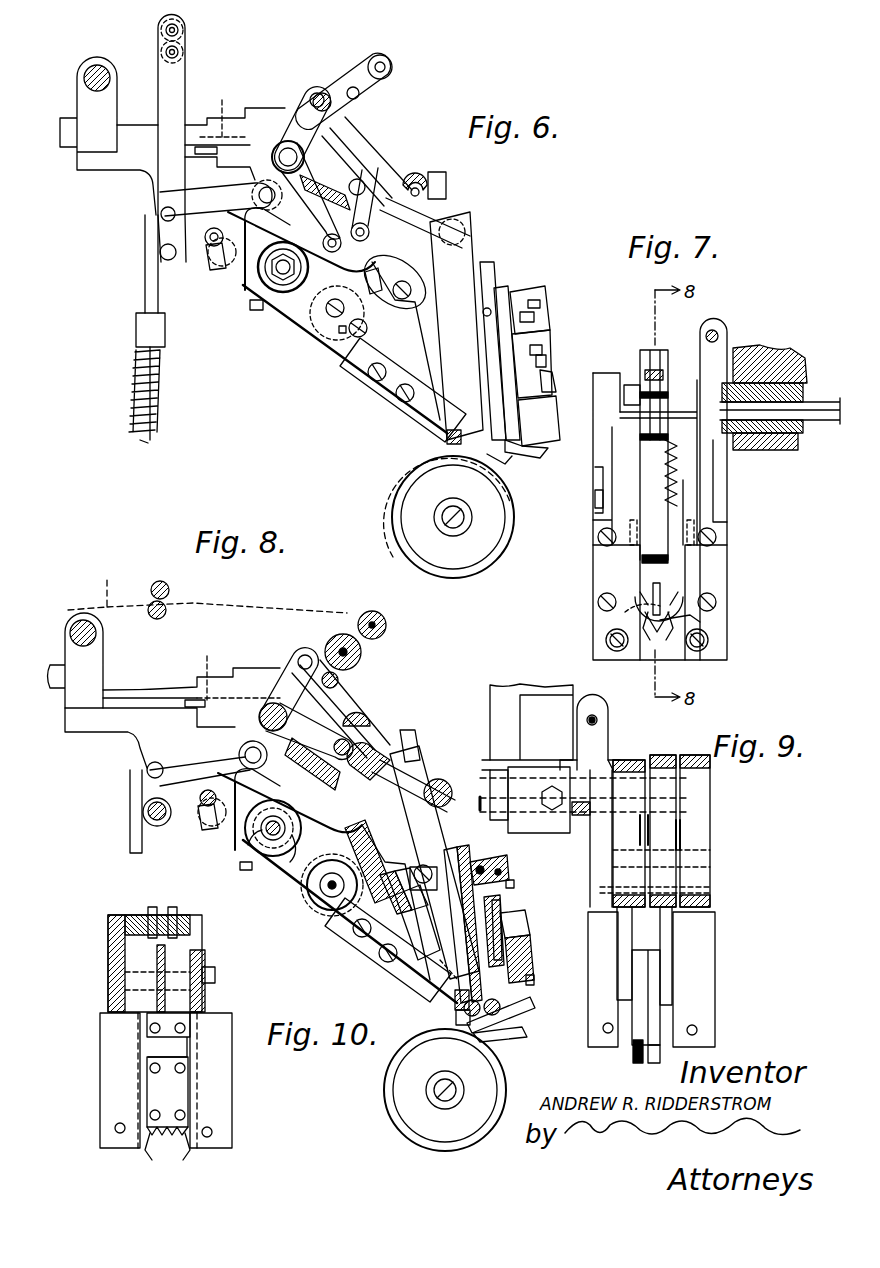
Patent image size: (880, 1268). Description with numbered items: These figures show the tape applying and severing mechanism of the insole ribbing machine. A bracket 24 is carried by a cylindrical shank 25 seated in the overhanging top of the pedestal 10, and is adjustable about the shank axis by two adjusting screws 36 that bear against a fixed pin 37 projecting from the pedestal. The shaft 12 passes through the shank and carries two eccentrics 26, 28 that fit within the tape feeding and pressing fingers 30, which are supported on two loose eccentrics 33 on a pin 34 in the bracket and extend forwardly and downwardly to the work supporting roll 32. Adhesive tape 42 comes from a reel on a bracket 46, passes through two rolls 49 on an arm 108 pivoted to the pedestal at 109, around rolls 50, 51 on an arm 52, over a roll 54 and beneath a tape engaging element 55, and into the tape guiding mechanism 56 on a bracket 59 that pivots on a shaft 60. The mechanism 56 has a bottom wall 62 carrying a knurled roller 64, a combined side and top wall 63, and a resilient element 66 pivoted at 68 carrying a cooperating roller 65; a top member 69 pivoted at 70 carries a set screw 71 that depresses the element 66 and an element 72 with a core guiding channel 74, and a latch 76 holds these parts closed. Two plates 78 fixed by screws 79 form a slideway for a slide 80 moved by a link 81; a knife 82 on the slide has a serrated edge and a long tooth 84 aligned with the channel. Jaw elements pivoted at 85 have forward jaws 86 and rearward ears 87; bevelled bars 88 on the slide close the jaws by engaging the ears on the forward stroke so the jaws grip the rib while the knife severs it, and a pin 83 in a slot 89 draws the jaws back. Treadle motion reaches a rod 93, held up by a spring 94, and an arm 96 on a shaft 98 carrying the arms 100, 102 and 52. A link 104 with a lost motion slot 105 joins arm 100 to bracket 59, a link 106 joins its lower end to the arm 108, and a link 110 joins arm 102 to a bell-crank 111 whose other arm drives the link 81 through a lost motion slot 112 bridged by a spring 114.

In FIG. 6, the pedestal 10 is at (283, 140).
In FIG. 7, the pedestal 10 is at (760, 348).
In FIG. 8, the pedestal 10 is at (310, 768).
In FIG. 7, the shaft 12 is at (826, 398).
In FIG. 9, the shaft 12 is at (690, 795).
In FIG. 8, the shaft 12 is at (270, 836).
In FIG. 6, the bracket 24 is at (258, 283).
In FIG. 7, the bracket 24 is at (696, 376).
In FIG. 8, the bracket 24 is at (234, 842).
In FIG. 10, the bracket 24 is at (137, 960).
In FIG. 7, the cylindrical shank 25 is at (793, 382).
In FIG. 9, the cylindrical shank 25 is at (518, 762).
In FIG. 8, the cylindrical shank 25 is at (496, 745).
In FIG. 9, the eccentric 26 is at (625, 772).
In FIG. 8, the eccentric 26 is at (250, 858).
In FIG. 9, the eccentric 28 is at (667, 765).
In FIG. 8, the eccentric 28 is at (290, 853).
In FIG. 6, the tape feeding and pressing fingers 30 is at (445, 442).
In FIG. 9, the tape feeding and pressing fingers 30 is at (652, 1058).
In FIG. 8, the tape feeding and pressing fingers 30 is at (455, 1000).
In FIG. 6, the work supporting roll 32 is at (395, 531).
In FIG. 8, the work supporting roll 32 is at (420, 1141).
In FIG. 6, the loose eccentrics 33 is at (310, 339).
In FIG. 9, the loose eccentrics 33 is at (690, 858).
In FIG. 8, the loose eccentrics 33 is at (325, 900).
In FIG. 6, the pin 34 is at (345, 358).
In FIG. 7, the pin 34 is at (593, 499).
In FIG. 9, the pin 34 is at (698, 877).
In FIG. 8, the pin 34 is at (357, 908).
In FIG. 6, the adjusting screws 36 is at (218, 272).
In FIG. 7, the adjusting screws 36 is at (713, 330).
In FIG. 9, the adjusting screws 36 is at (592, 715).
In FIG. 8, the adjusting screws 36 is at (206, 832).
In FIG. 6, the fixed pin 37 is at (207, 248).
In FIG. 9, the fixed pin 37 is at (610, 733).
In FIG. 8, the fixed pin 37 is at (200, 808).
In FIG. 8, the adhesive tape 42 is at (207, 588).
In FIG. 6, the bracket 46 is at (130, 133).
In FIG. 8, the bracket 46 is at (115, 685).
In FIG. 6, the tape feeding rolls 49 is at (183, 30).
In FIG. 8, the tape feeding rolls 49 is at (167, 606).
In FIG. 6, the roll 50 is at (393, 69).
In FIG. 8, the roll 50 is at (388, 629).
In FIG. 6, the roll 51 is at (368, 97).
In FIG. 8, the roll 51 is at (363, 655).
In FIG. 6, the arm 52 is at (360, 66).
In FIG. 6, the roll 54 is at (462, 235).
In FIG. 8, the roll 54 is at (440, 782).
In FIG. 6, the tape engaging element 55 is at (446, 177).
In FIG. 8, the tape engaging element 55 is at (420, 738).
In FIG. 6, the tape guiding mechanism 56 is at (523, 292).
In FIG. 8, the tape guiding mechanism 56 is at (546, 986).
In FIG. 6, the bracket 59 is at (470, 258).
In FIG. 8, the bracket 59 is at (458, 850).
In FIG. 8, the shaft 60 is at (385, 890).
In FIG. 10, the shaft 60 is at (216, 981).
In FIG. 6, the bottom wall 62 is at (470, 282).
In FIG. 8, the bottom wall 62 is at (473, 917).
In FIG. 6, the combined side and top wall 63 is at (506, 308).
In FIG. 8, the combined side and top wall 63 is at (478, 866).
In FIG. 6, the knurled tape engaging roller 64 is at (498, 462).
In FIG. 6, the roller 65 is at (527, 450).
In FIG. 8, the roller 65 is at (512, 1020).
In FIG. 6, the resilient element 66 is at (528, 352).
In FIG. 8, the resilient element 66 is at (535, 962).
In FIG. 6, the pivot 68 is at (490, 302).
In FIG. 8, the pivot 68 is at (496, 870).
In FIG. 6, the top member 69 is at (522, 315).
In FIG. 8, the top member 69 is at (512, 905).
In FIG. 6, the pivot 70 is at (520, 296).
In FIG. 8, the pivot 70 is at (506, 874).
In FIG. 6, the set screw 71 is at (508, 346).
In FIG. 8, the set screw 71 is at (516, 885).
In FIG. 6, the element 72 is at (542, 430).
In FIG. 8, the element 72 is at (510, 1038).
In FIG. 8, the core stock guiding channel 74 is at (510, 1010).
In FIG. 6, the pivoted latch 76 is at (538, 380).
In FIG. 8, the pivoted latch 76 is at (530, 945).
In FIG. 6, the plates 78 is at (432, 350).
In FIG. 7, the plates 78 is at (593, 641).
In FIG. 9, the plates 78 is at (592, 930).
In FIG. 8, the plates 78 is at (578, 925).
In FIG. 10, the plates 78 is at (106, 1097).
In FIG. 7, the screws 79 is at (599, 537).
In FIG. 8, the slide 80 is at (425, 940).
In FIG. 10, the slide 80 is at (147, 1045).
In FIG. 6, the link 81 is at (440, 216).
In FIG. 7, the link 81 is at (650, 467).
In FIG. 8, the link 81 is at (430, 772).
In FIG. 10, the knife 82 is at (170, 1090).
In FIG. 7, the pin 83 is at (700, 625).
In FIG. 7, the cutting tooth 84 is at (656, 640).
In FIG. 8, the cutting tooth 84 is at (456, 1016).
In FIG. 10, the cutting tooth 84 is at (160, 1140).
In FIG. 7, the pivot 85 is at (608, 640).
In FIG. 9, the pivot 85 is at (697, 1030).
In FIG. 10, the pivot 85 is at (212, 1133).
In FIG. 7, the jaws 86 is at (645, 642).
In FIG. 8, the jaws 86 is at (418, 892).
In FIG. 10, the jaws 86 is at (143, 1152).
In FIG. 7, the ears 87 is at (688, 592).
In FIG. 8, the ears 87 is at (423, 892).
In FIG. 7, the bars 88 is at (640, 551).
In FIG. 8, the bars 88 is at (430, 866).
In FIG. 7, the slot 89 is at (628, 612).
In FIG. 8, the slot 89 is at (440, 968).
In FIG. 6, the rod 93 is at (152, 441).
In FIG. 8, the rod 93 is at (130, 846).
In FIG. 6, the spring 94 is at (134, 392).
In FIG. 6, the arm 96 is at (222, 112).
In FIG. 8, the arm 96 is at (205, 671).
In FIG. 6, the shaft 98 is at (282, 155).
In FIG. 8, the shaft 98 is at (272, 715).
In FIG. 6, the arm 100 is at (308, 104).
In FIG. 8, the arm 100 is at (300, 660).
In FIG. 6, the arm 102 is at (350, 126).
In FIG. 7, the arm 102 is at (650, 352).
In FIG. 8, the arm 102 is at (342, 700).
In FIG. 6, the link 104 is at (372, 146).
In FIG. 8, the link 104 is at (375, 703).
In FIG. 6, the lost motion slot 105 is at (326, 92).
In FIG. 8, the lost motion slot 105 is at (340, 680).
In FIG. 6, the link 106 is at (185, 185).
In FIG. 6, the arm 108 is at (158, 74).
In FIG. 6, the pivot 109 is at (160, 258).
In FIG. 8, the pivot 109 is at (147, 808).
In FIG. 6, the link 110 is at (340, 209).
In FIG. 8, the link 110 is at (297, 775).
In FIG. 6, the bell-crank 111 is at (405, 177).
In FIG. 7, the bell-crank 111 is at (632, 385).
In FIG. 8, the bell-crank 111 is at (362, 724).
In FIG. 10, the bell-crank 111 is at (151, 906).
In FIG. 8, the lost motion slot 112 is at (400, 727).
In FIG. 7, the spring 114 is at (680, 481).